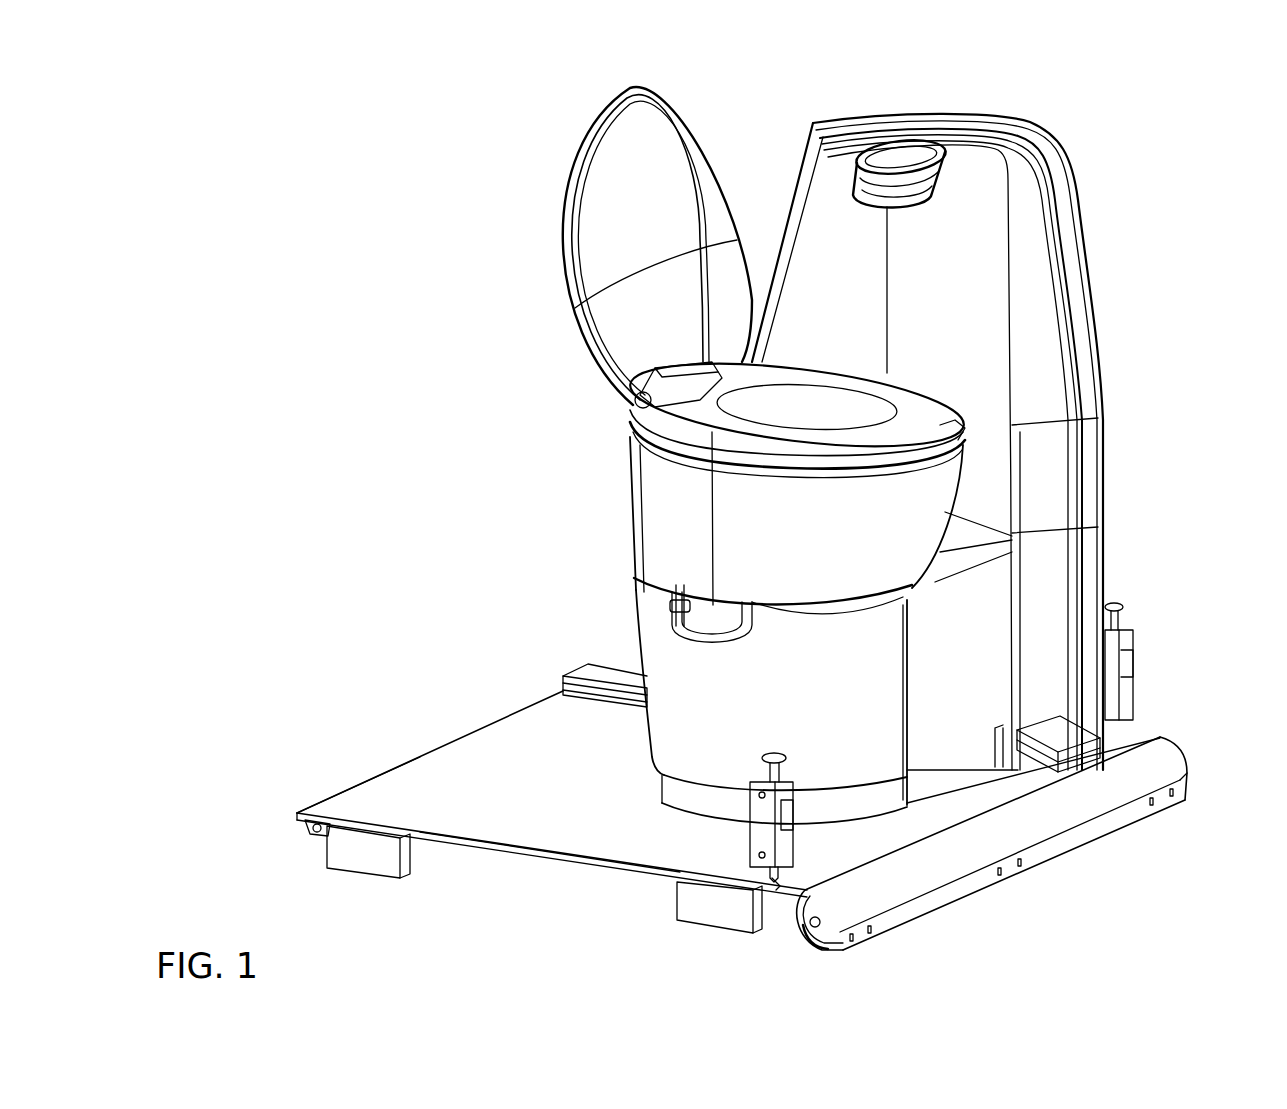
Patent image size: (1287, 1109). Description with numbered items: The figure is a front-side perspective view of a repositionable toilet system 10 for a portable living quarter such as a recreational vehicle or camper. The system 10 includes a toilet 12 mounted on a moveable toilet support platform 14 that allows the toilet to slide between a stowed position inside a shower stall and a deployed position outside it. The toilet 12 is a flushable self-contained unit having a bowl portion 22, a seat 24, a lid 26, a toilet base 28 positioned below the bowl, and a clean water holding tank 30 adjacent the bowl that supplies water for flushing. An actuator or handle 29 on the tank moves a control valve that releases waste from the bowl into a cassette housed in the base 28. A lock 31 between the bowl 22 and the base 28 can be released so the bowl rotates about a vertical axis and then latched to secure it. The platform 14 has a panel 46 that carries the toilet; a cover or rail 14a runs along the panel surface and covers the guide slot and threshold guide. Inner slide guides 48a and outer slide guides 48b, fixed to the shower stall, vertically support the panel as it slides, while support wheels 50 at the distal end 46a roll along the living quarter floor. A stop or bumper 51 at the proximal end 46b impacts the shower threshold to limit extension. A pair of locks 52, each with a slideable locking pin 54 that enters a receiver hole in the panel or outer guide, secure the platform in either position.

The repositionable toilet system 10 is at (1178, 176).
The toilet 12 is at (510, 407).
The moveable toilet support platform 14 is at (575, 850).
The cover or rail 14a is at (590, 665).
The bowl portion 22 is at (635, 505).
The seat 24 is at (808, 368).
The lid 26 is at (578, 210).
The toilet base 28 is at (660, 740).
The actuator or handle 29 is at (862, 205).
The clean water holding tank 30 is at (977, 208).
The lock 31 is at (672, 622).
The panel or base 46 is at (513, 793).
The distal end 46a is at (990, 885).
The proximal end 46b is at (395, 755).
The inner supports or slide guides 48a is at (367, 872).
The outer supports or slide guides 48b is at (715, 915).
The support wheels 50 is at (820, 945).
The stop or bumper 51 is at (310, 828).
The locks 52 is at (790, 790).
The slideable locking pin 54 is at (1125, 727).